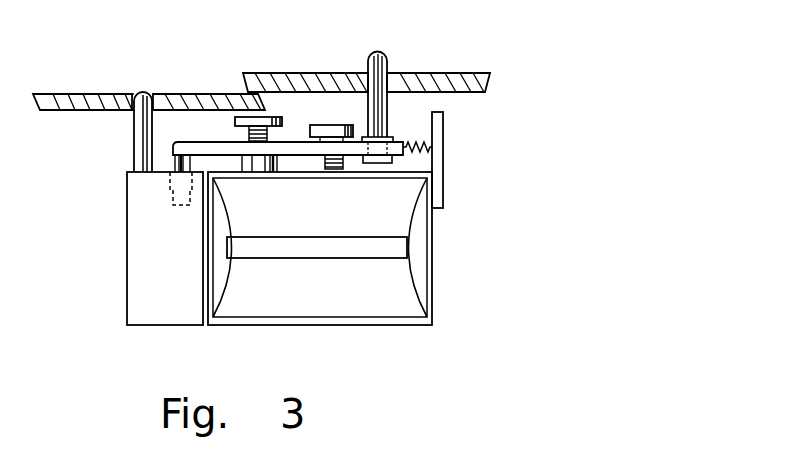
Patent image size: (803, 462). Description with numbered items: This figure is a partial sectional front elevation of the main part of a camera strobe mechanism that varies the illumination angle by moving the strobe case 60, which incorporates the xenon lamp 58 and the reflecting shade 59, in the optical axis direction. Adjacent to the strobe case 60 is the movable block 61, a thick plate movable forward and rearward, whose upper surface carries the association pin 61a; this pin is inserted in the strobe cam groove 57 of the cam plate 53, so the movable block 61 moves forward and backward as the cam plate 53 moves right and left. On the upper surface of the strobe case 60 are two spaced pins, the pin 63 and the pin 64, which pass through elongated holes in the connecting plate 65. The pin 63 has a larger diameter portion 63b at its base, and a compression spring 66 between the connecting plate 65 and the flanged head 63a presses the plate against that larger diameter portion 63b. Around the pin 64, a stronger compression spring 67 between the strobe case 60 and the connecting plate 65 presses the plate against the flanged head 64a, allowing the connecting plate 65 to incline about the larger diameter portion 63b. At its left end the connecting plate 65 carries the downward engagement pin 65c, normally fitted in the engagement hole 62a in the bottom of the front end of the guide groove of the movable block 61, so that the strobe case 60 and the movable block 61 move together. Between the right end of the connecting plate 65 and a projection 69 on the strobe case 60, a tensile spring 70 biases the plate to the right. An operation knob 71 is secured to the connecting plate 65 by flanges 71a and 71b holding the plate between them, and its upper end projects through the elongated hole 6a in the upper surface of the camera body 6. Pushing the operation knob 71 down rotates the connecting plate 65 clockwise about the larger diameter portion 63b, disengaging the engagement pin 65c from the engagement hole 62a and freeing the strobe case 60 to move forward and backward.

The camera body 6 is at (478, 73).
The elongated hole 6a is at (375, 52).
The cam plate 53 is at (52, 94).
The strobe cam groove 57 is at (133, 94).
The xenon lamp 58 is at (360, 250).
The reflecting shade 59 is at (402, 305).
The strobe case 60 is at (435, 280).
The movable block 61 is at (127, 238).
The association pin 61a is at (142, 92).
The engagement hole 62a is at (170, 200).
The pin 63 is at (252, 117).
The flanged head 63a is at (237, 117).
The larger diameter portion 63b is at (256, 164).
The pin 64 is at (321, 125).
The flanged head 64a is at (347, 125).
The connecting plate 65 is at (287, 148).
The engagement pin 65c is at (175, 162).
The compression spring 66 is at (263, 138).
The compression spring 67 is at (330, 164).
The projection 69 is at (441, 156).
The tensile spring 70 is at (418, 145).
The operation knob 71 is at (383, 54).
The flange 71a is at (390, 137).
The flange 71b is at (385, 163).